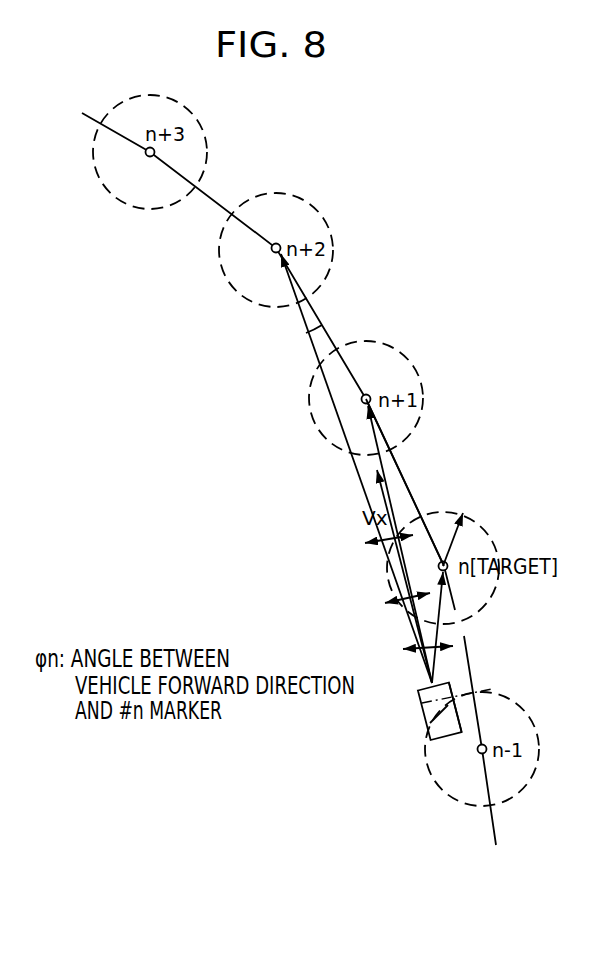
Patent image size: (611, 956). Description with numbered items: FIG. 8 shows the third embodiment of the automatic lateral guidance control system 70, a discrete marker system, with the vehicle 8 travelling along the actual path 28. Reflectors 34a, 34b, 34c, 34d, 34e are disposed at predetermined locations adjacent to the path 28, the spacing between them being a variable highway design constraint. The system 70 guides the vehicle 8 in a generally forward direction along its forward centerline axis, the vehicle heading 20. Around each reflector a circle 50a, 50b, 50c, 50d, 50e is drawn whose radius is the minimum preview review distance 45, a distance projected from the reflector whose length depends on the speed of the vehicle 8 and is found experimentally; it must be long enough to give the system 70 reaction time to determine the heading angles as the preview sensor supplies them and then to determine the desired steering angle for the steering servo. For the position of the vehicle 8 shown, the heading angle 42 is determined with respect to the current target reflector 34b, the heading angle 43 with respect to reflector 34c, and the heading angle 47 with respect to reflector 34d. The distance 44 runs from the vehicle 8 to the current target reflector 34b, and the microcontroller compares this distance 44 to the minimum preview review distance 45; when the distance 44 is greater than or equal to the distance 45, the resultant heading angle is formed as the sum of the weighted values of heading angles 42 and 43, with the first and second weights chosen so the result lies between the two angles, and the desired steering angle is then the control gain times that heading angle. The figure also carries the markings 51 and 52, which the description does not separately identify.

The vehicle 8 is at (418, 719).
The vehicle heading 20 is at (374, 502).
The actual path 28 is at (218, 195).
The reflector 34a is at (474, 753).
The reflector 34b is at (436, 568).
The reflector 34c is at (372, 394).
The reflector 34d is at (281, 240).
The reflector 34e is at (157, 150).
The heading angle 42 is at (401, 649).
The heading angle 43 is at (383, 603).
The distance 44 is at (440, 603).
The minimum preview review distance 45 is at (450, 542).
The heading angle 47 is at (362, 543).
The circle 50a is at (532, 724).
The circle 50b is at (493, 538).
The circle 50c is at (382, 342).
The circle 50d is at (334, 240).
The circle 50e is at (192, 111).
The path segment from marker n+1 to marker n 51 is at (413, 437).
The angle between path and line of sight at marker n+2 52 is at (330, 318).
The automatic lateral guidance control system 70 is at (449, 683).